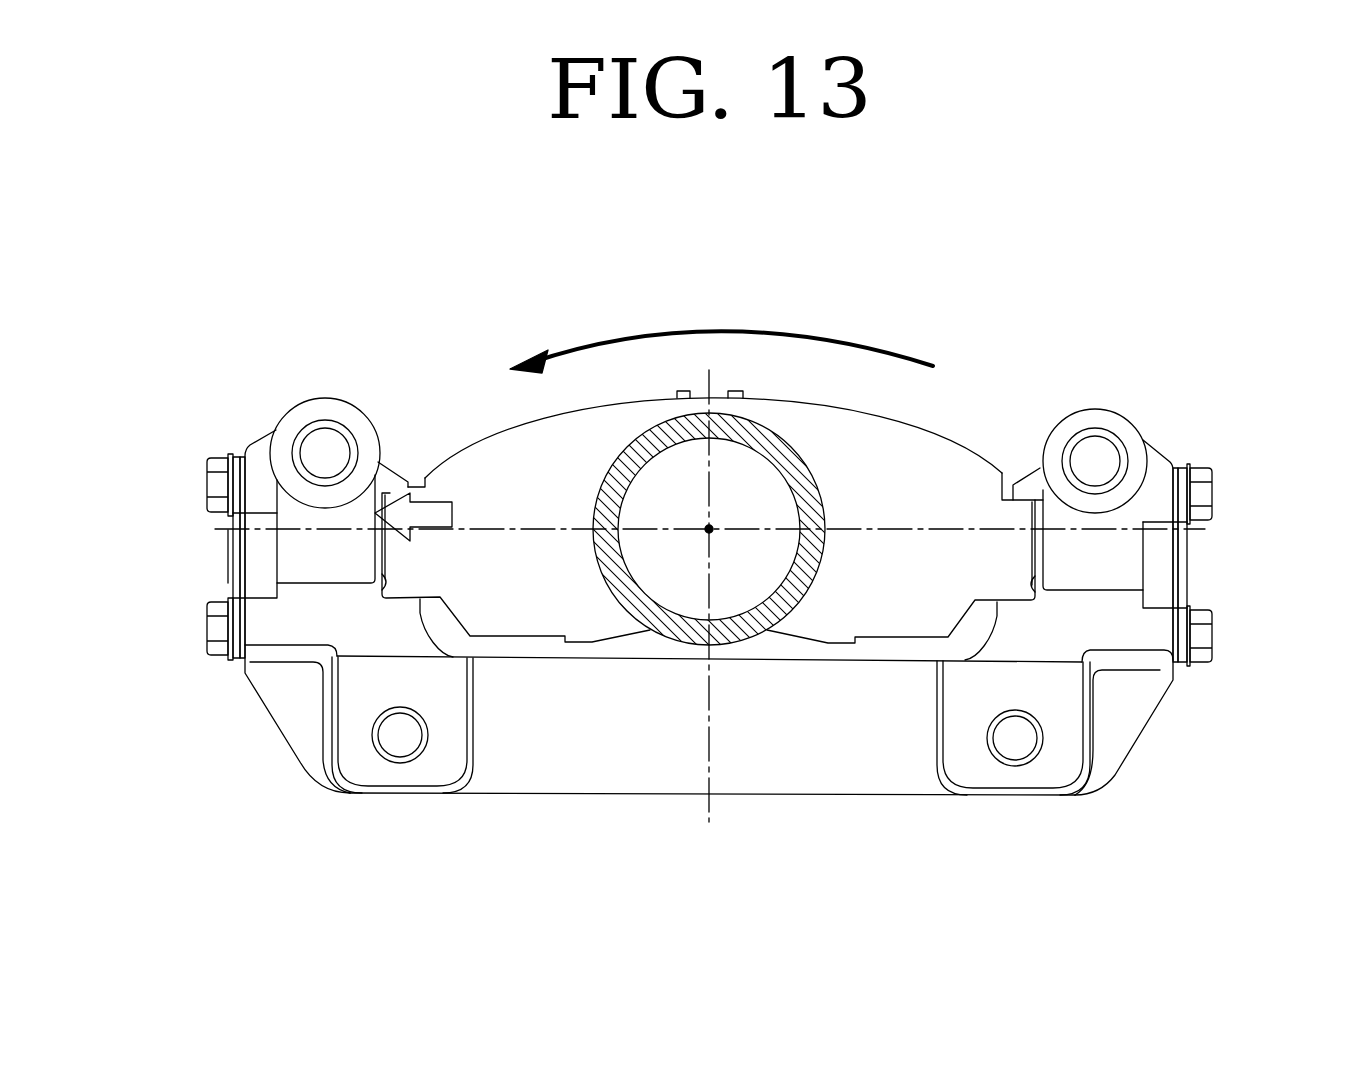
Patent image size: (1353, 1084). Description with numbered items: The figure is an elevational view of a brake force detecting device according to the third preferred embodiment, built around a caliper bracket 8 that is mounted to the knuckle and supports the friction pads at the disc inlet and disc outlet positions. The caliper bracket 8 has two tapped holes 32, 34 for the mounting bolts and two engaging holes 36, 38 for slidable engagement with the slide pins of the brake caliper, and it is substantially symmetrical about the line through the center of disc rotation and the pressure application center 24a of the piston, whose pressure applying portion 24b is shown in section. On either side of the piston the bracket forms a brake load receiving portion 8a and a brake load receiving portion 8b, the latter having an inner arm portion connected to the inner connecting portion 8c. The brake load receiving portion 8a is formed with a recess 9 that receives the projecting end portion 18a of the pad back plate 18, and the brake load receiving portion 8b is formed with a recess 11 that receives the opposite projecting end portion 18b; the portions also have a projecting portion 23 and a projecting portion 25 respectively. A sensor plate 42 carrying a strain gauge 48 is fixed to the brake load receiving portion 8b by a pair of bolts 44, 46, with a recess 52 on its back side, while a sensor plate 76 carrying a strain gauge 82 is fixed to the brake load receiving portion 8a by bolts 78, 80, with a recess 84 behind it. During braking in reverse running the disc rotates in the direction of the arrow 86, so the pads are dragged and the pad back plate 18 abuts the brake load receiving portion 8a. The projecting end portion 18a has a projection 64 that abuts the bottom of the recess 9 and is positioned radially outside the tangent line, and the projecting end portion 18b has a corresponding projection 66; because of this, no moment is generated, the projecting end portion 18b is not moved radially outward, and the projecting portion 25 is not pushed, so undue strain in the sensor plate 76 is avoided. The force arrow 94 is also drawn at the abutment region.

The caliper bracket 8 is at (727, 820).
The brake load receiving portion 8a is at (250, 440).
The brake load receiving portion 8b is at (1155, 445).
The inner connecting portion 8c is at (600, 794).
The recess 9 is at (385, 588).
The recess 11 is at (1040, 600).
The pad back plate 18 is at (622, 410).
The projecting end portion 18a is at (400, 608).
The projecting end portion 18b is at (1006, 605).
The projecting portion 23 is at (393, 475).
The pressure application center 24a is at (706, 527).
The pressure applying portion 24b is at (822, 508).
The projecting portion 25 is at (1030, 470).
The tapped hole 32 is at (400, 748).
The tapped hole 34 is at (1016, 750).
The engaging hole 36 is at (340, 399).
The engaging hole 38 is at (1097, 410).
The sensor plate 42 is at (1182, 598).
The bolt 44 is at (1205, 470).
The bolt 46 is at (1205, 645).
The strain gauge 48 is at (1190, 555).
The recess 52 is at (1160, 545).
The projection 64 is at (375, 515).
The projection 66 is at (1048, 520).
The sensor plate 76 is at (235, 590).
The bolt 78 is at (207, 470).
The bolt 80 is at (210, 645).
The strain gauge 82 is at (226, 565).
The recess 84 is at (240, 545).
The arrow 86 is at (716, 328).
The force direction arrow 94 is at (453, 506).